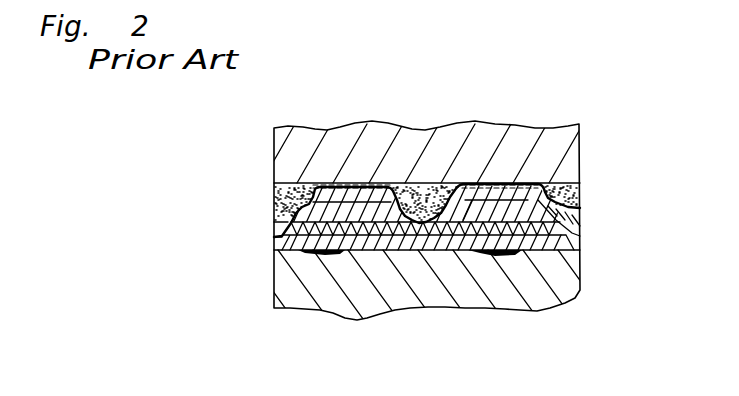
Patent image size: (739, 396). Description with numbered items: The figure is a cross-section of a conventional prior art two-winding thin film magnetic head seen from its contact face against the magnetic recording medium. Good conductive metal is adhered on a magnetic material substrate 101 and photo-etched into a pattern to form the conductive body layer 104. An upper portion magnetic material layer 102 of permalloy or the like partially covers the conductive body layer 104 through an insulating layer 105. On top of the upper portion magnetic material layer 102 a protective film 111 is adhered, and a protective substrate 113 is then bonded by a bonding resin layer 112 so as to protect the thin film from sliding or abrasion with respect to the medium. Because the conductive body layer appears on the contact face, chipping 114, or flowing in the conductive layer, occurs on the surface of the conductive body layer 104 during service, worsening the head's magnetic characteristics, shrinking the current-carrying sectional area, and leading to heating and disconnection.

The magnetic material substrate 101 is at (540, 280).
The upper portion magnetic material layer 102 is at (560, 190).
The conductive body layer 104 is at (545, 238).
The insulating layer 105 is at (562, 209).
The protective film 111 is at (539, 183).
The bonding resin layer 112 is at (445, 185).
The protective substrate 113 is at (541, 181).
The chipping 114 is at (345, 253).